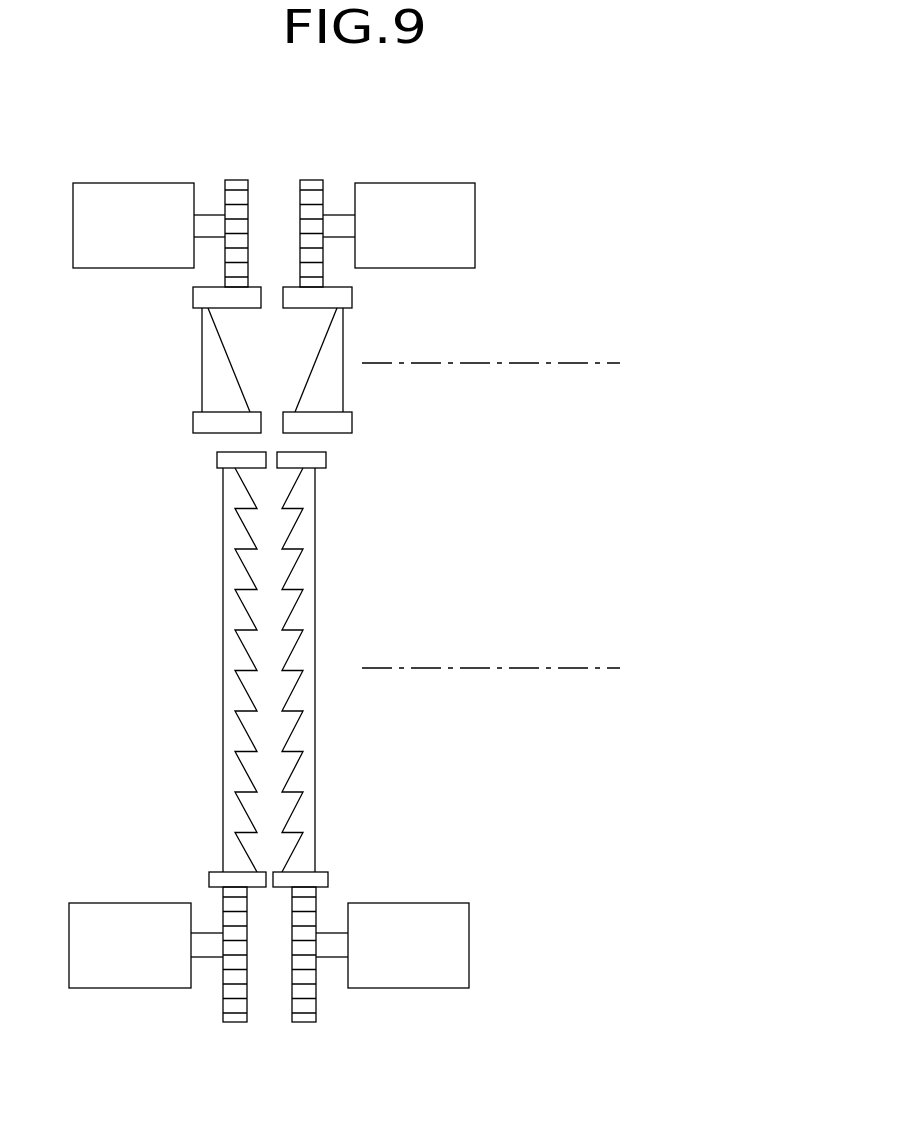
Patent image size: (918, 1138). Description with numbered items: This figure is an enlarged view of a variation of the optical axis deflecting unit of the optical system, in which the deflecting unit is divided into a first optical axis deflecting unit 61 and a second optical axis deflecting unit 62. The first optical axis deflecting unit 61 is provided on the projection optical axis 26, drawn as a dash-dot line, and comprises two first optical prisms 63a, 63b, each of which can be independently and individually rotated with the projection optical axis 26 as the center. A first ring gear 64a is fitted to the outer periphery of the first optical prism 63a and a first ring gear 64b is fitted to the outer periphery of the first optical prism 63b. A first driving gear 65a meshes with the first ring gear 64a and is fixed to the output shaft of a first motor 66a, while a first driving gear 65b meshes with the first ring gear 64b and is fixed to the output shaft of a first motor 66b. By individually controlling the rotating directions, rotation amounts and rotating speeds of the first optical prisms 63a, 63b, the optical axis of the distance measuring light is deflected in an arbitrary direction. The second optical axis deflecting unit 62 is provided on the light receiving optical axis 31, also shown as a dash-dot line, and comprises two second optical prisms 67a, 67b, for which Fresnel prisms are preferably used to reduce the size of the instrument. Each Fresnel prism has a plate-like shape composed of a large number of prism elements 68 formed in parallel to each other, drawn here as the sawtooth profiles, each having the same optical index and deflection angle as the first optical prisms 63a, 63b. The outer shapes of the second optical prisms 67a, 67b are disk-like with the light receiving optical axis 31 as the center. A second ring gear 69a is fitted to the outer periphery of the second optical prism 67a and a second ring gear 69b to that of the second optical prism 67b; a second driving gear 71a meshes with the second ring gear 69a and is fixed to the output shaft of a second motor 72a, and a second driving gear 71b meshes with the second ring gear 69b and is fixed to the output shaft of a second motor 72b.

The projection optical axis 26 is at (537, 363).
The light receiving optical axis 31 is at (530, 668).
The first optical axis deflecting unit 61 is at (527, 392).
The second optical axis deflecting unit 62 is at (362, 728).
The first optical prism 63a is at (200, 373).
The first optical prism 63b is at (343, 385).
The first ring gear 64a is at (193, 300).
The first ring gear 64b is at (352, 297).
The first driving gear 65a is at (243, 180).
The first driving gear 65b is at (318, 180).
The first motor 66a is at (125, 183).
The first motor 66b is at (410, 183).
The second optical prism 67a is at (223, 570).
The second optical prism 67b is at (315, 548).
The prism element 68 is at (288, 650).
The second ring gear 69a is at (209, 875).
The second ring gear 69b is at (328, 876).
The second driving gear 71a is at (223, 1005).
The second driving gear 71b is at (316, 1003).
The second motor 72a is at (90, 903).
The second motor 72b is at (440, 903).